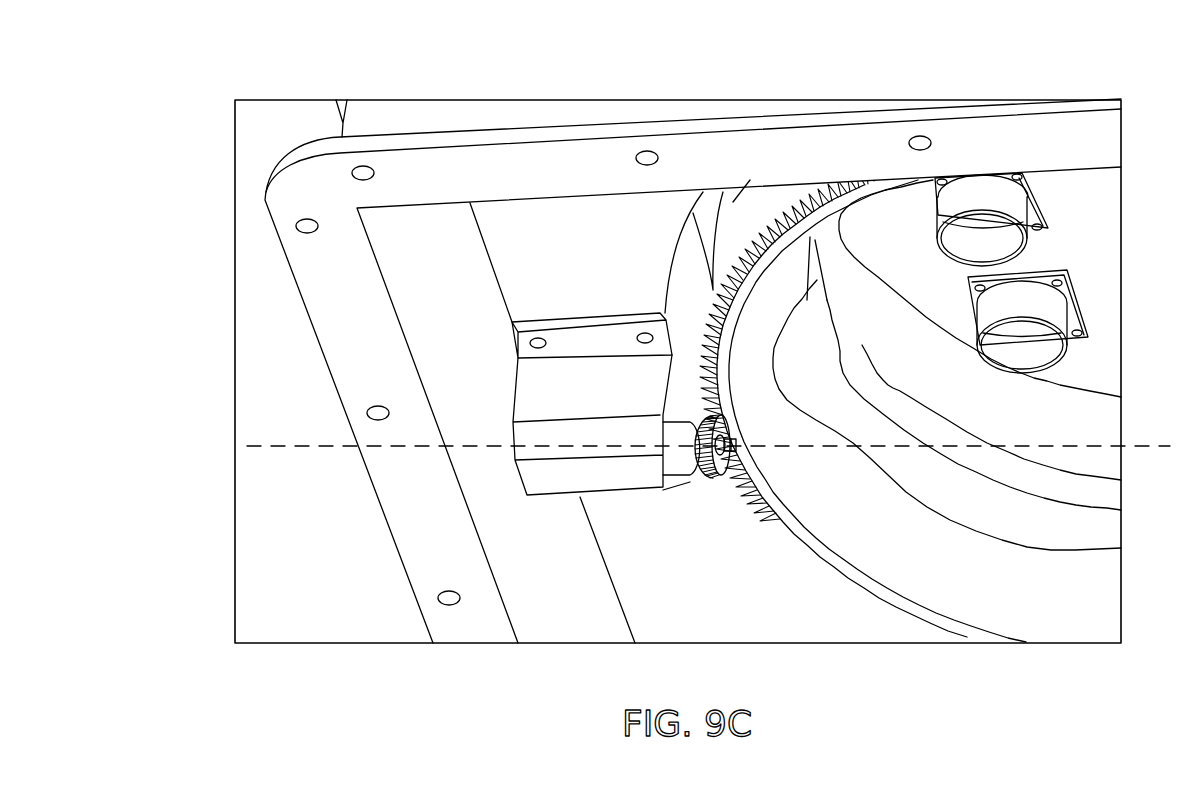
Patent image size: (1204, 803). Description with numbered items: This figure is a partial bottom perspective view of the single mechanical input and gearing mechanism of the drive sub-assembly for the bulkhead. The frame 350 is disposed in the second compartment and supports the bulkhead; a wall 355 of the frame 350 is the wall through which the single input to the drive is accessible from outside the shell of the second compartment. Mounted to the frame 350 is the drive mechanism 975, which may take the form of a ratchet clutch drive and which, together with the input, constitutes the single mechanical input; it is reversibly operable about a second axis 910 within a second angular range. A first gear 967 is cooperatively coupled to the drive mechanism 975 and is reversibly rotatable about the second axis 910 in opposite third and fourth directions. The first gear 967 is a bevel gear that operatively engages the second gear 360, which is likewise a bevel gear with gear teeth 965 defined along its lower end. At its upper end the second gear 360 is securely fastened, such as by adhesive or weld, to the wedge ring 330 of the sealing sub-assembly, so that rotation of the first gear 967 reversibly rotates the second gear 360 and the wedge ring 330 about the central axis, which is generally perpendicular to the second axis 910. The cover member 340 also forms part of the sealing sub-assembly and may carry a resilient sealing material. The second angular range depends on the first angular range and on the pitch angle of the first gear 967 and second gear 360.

The wedge ring 330 is at (1065, 418).
The cover member 340 is at (1083, 233).
The frame 350 is at (378, 118).
The wall 355 is at (528, 598).
The second gear 360 is at (740, 200).
The second axis 910 is at (287, 446).
The gear teeth 965 is at (800, 190).
The first gear 967 is at (715, 478).
The drive mechanism 975 is at (555, 470).